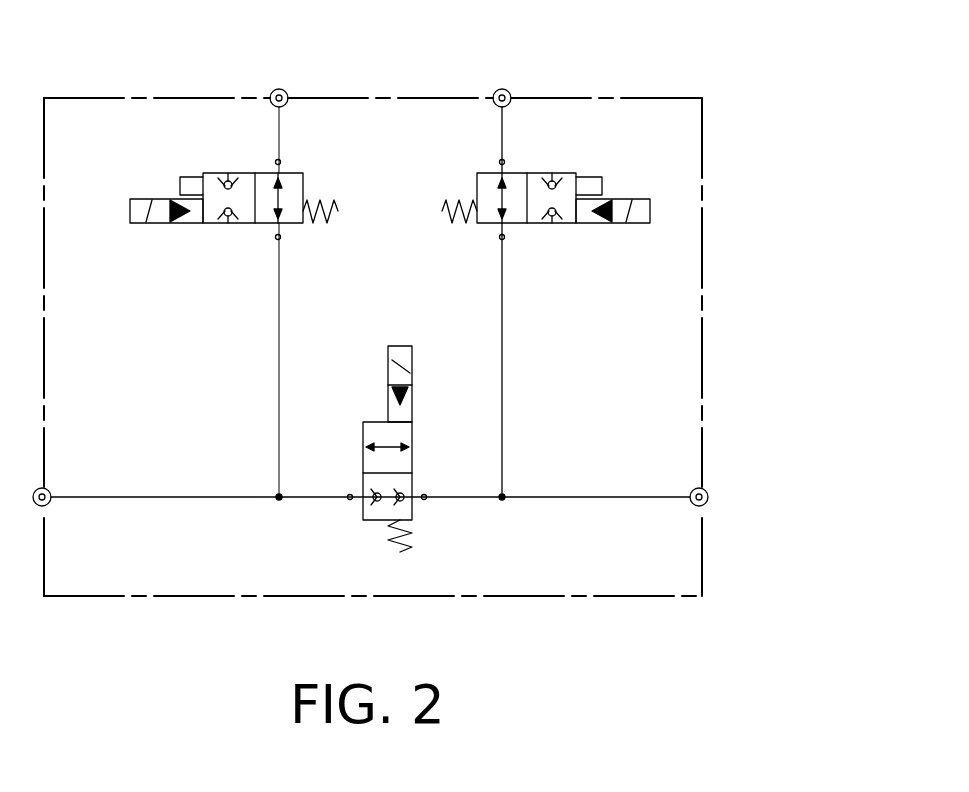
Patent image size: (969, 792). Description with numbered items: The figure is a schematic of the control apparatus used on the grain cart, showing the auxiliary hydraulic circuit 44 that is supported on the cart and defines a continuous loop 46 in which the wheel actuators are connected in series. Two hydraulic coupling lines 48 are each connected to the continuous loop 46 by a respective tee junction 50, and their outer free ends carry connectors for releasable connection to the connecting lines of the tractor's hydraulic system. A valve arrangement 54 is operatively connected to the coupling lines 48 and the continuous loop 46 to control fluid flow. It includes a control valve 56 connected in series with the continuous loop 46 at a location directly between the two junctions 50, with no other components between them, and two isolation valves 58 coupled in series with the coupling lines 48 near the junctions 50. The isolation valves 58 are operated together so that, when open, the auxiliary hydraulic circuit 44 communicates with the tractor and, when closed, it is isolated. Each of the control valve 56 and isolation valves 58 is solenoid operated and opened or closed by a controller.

The auxiliary hydraulic circuit 44 is at (645, 318).
The continuous loop 46 is at (633, 498).
The hydraulic coupling lines 48 is at (279, 138).
The tee junction 50 is at (277, 495).
The valve arrangement 54 is at (708, 122).
The control valve 56 is at (413, 463).
The isolation valves 58 is at (207, 224).